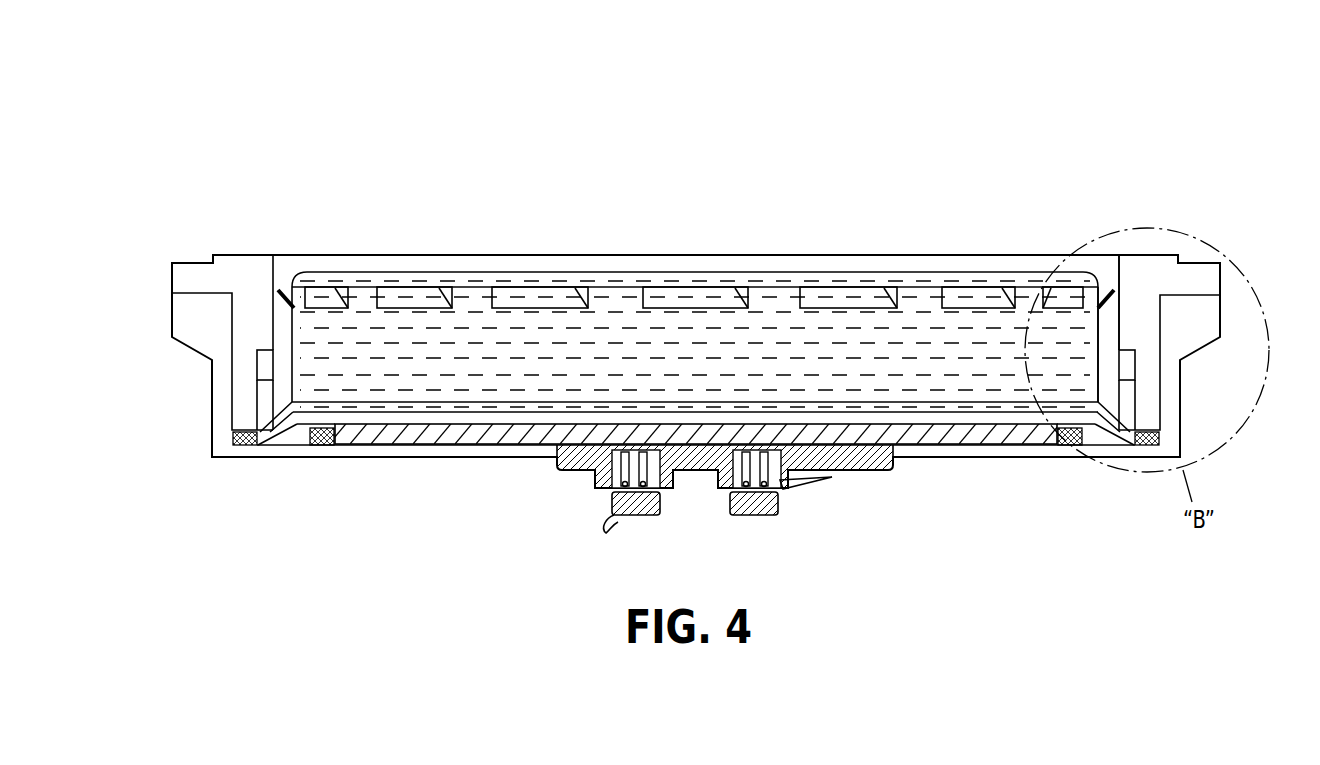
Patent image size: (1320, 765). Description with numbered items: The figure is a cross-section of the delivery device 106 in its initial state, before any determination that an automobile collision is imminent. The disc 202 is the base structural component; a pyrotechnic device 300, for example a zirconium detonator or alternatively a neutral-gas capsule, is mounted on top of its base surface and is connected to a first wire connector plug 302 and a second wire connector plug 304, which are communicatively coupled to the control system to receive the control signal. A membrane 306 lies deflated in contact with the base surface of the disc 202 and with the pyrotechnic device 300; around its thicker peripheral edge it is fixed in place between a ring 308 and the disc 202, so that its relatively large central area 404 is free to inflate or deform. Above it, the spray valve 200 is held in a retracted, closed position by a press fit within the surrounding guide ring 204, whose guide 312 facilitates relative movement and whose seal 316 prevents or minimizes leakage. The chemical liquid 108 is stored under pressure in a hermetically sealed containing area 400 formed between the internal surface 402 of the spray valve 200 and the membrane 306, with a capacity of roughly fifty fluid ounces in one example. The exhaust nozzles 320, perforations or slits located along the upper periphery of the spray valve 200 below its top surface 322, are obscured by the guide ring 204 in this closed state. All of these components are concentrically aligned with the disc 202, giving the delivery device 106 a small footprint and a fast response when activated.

The delivery device 106 is at (1080, 122).
The chemical liquid 108 is at (716, 380).
The spray valve 200 is at (833, 262).
The disc 202 is at (203, 327).
The guide ring 204 is at (228, 258).
The pyrotechnic device 300 is at (318, 434).
The first wire connector plug 302 is at (607, 478).
The second wire connector plug 304 is at (773, 505).
The membrane 306 is at (392, 428).
The ring 308 is at (233, 443).
The guide 312 is at (262, 318).
The seal 316 is at (270, 262).
The exhaust nozzles 320 is at (550, 290).
The top surface 322 is at (708, 255).
The containing area 400 is at (905, 330).
The internal surface 402 is at (1100, 358).
The central area 404 is at (437, 430).